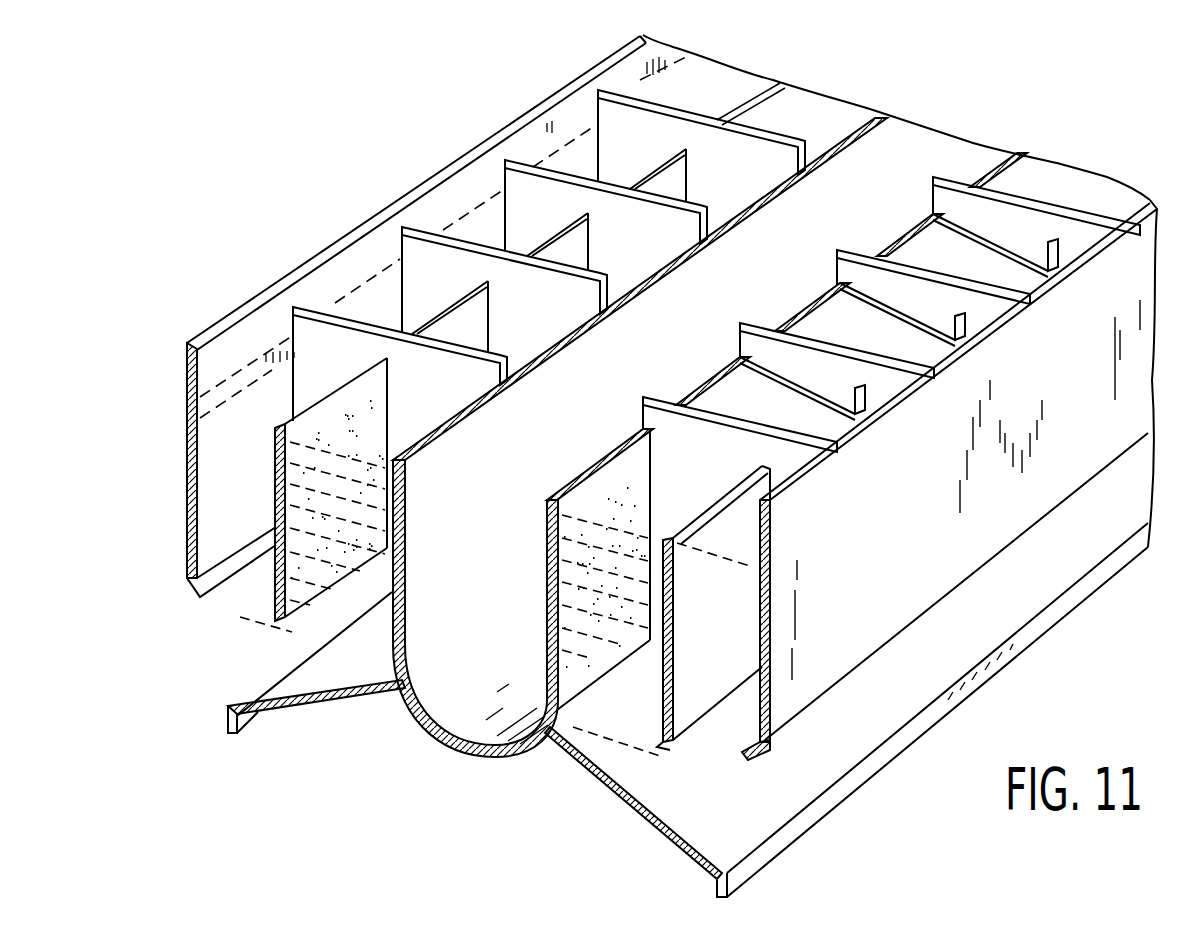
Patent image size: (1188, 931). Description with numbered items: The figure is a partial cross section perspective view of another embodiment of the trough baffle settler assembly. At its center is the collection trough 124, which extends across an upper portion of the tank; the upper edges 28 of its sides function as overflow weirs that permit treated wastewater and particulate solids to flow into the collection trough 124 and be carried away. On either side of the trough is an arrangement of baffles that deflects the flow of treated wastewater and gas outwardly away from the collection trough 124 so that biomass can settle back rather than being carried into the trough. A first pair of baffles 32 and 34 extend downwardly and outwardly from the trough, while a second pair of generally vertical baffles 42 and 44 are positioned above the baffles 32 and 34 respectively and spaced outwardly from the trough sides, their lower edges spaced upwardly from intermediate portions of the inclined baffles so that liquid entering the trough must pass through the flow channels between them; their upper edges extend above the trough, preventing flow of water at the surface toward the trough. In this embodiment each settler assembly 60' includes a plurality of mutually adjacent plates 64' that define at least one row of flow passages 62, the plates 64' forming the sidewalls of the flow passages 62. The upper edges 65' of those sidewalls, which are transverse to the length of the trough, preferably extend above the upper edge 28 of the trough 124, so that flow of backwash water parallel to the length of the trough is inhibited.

The upper edges of the trough sides 28 is at (606, 460).
The baffle 32 is at (366, 675).
The baffle 34 is at (738, 820).
The vertical baffle 42 is at (249, 501).
The vertical baffle 44 is at (882, 581).
The settler assembly 60' is at (767, 123).
The flow passages 62 is at (614, 178).
The plates 64' is at (716, 275).
The upper edges of the sidewalls 65' is at (782, 284).
The collection trough 124 is at (502, 647).